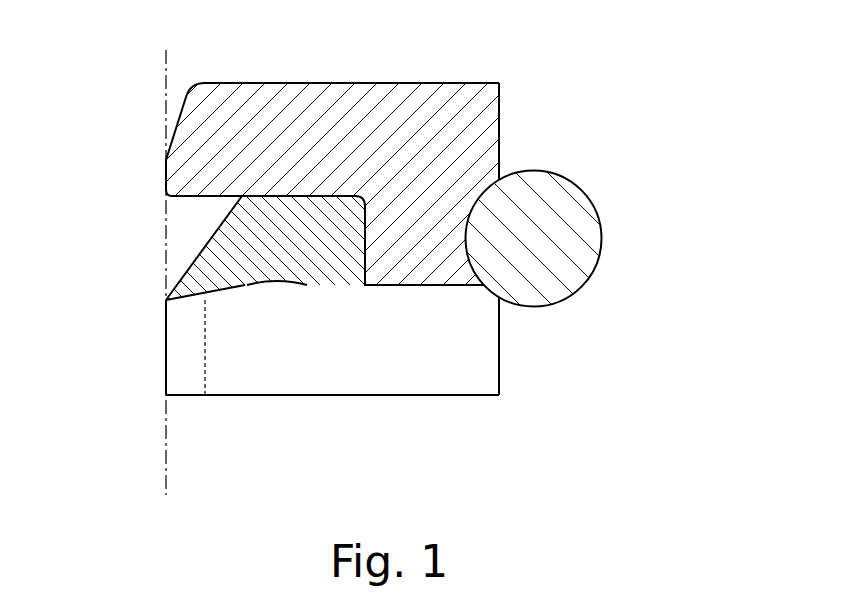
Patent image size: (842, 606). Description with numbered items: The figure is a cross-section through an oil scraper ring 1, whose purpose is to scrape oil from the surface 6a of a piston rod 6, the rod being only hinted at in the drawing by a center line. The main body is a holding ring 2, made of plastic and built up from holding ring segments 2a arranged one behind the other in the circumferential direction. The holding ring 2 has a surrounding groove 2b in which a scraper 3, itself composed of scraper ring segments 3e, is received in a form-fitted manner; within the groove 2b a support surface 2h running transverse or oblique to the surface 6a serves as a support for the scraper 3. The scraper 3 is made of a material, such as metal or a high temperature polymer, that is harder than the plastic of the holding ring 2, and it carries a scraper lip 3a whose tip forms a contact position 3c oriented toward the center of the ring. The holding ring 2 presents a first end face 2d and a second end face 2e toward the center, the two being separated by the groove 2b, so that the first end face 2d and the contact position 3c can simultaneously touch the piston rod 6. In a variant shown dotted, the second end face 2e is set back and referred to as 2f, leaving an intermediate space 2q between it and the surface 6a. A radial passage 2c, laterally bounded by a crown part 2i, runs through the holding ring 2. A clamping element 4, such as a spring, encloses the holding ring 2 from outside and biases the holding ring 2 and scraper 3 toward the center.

The oil scraper ring 1 is at (562, 86).
The holding ring 2 is at (346, 244).
The holding ring segment 2a is at (370, 100).
The groove 2b is at (193, 212).
The passage 2c is at (448, 377).
The first end face 2d is at (152, 169).
The second end face 2e is at (152, 331).
The set-back second end face 2f is at (192, 358).
The support surface 2h is at (190, 267).
The crown part 2i is at (366, 408).
The intermediate space 2q is at (177, 386).
The scraper 3 is at (260, 254).
The scraper lip 3a is at (206, 276).
The contact position 3c is at (152, 298).
The scraper ring segment 3e is at (215, 226).
The clamping element 4 is at (575, 212).
The piston rod 6 is at (165, 495).
The surface of the piston rod 6a is at (172, 58).